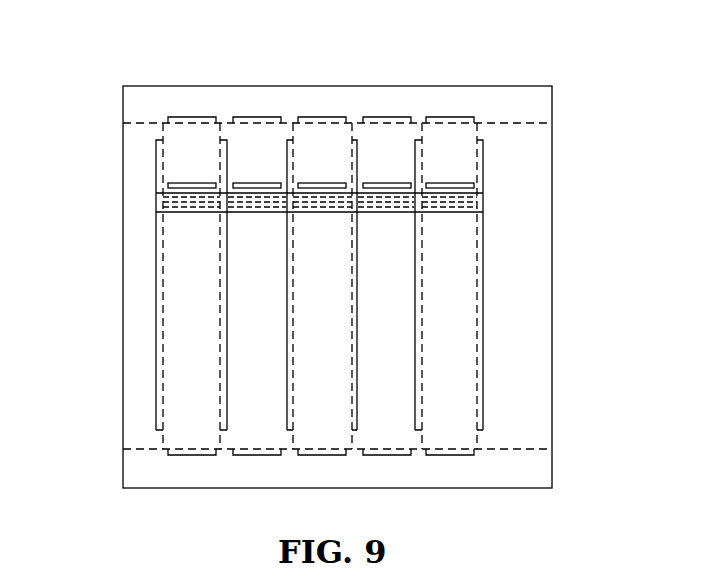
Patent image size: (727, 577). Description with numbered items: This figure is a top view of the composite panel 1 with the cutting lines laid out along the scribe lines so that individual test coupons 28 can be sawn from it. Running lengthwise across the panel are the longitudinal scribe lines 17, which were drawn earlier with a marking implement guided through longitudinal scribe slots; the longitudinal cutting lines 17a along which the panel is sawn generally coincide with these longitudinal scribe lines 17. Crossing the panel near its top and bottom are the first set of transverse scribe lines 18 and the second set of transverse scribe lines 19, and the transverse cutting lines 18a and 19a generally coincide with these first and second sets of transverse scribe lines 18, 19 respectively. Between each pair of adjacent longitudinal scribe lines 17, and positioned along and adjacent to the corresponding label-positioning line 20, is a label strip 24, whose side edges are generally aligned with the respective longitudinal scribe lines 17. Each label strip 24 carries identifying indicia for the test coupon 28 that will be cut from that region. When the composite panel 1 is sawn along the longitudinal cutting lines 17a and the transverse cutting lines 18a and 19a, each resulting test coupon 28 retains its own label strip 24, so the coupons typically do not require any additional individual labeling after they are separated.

The composite panel 1 is at (140, 235).
The longitudinal scribe lines 17 is at (228, 348).
The longitudinal cutting lines 17a is at (221, 413).
The first set of transverse scribe lines 18 is at (432, 117).
The transverse cutting lines 18a is at (143, 123).
The second set of transverse scribe lines 19 is at (387, 455).
The transverse cutting lines 19a is at (143, 449).
The label-positioning lines 20 is at (188, 186).
The label strips 24 is at (383, 202).
The test coupons 28 is at (199, 311).